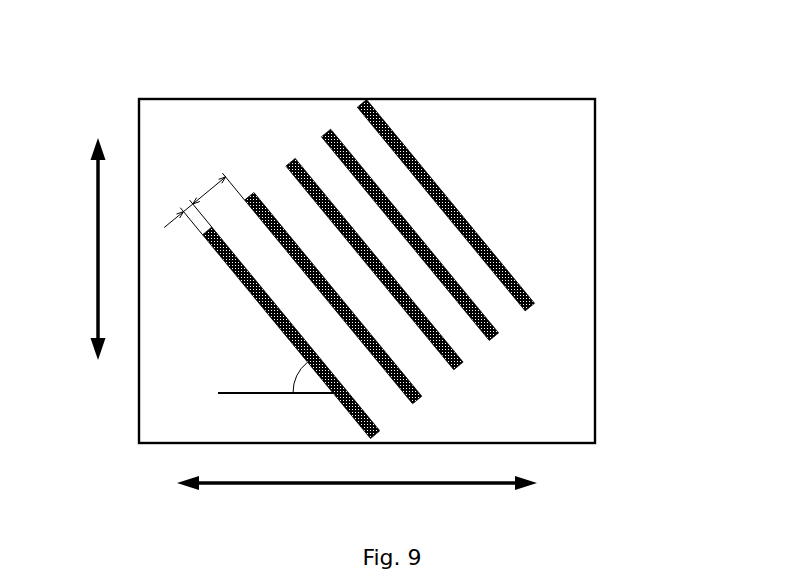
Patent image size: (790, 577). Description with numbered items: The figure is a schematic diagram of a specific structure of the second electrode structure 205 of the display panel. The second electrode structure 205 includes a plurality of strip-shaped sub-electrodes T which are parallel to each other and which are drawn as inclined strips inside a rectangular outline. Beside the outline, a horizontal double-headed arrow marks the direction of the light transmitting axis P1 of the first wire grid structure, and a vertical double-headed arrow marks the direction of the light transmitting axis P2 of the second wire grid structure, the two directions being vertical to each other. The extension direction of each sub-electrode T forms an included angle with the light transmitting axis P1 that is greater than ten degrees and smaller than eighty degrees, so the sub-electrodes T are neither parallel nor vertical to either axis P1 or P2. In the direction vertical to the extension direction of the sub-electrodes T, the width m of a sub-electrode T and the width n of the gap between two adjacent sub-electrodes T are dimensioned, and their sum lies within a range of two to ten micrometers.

The second electrode structure 205 is at (560, 178).
The strip-shaped sub-electrode T is at (389, 130).
The width of the sub-electrode m is at (182, 210).
The width of the gap between two adjacent sub-electrodes n is at (217, 181).
The light transmitting axis of the first wire grid structure P1 is at (357, 502).
The light transmitting axis of the second wire grid structure P2 is at (69, 249).